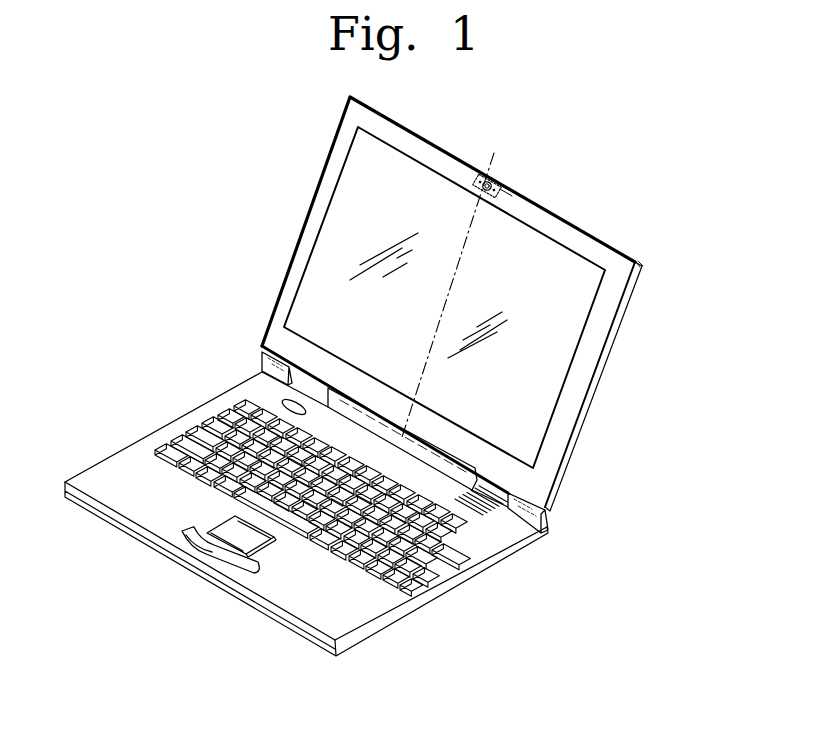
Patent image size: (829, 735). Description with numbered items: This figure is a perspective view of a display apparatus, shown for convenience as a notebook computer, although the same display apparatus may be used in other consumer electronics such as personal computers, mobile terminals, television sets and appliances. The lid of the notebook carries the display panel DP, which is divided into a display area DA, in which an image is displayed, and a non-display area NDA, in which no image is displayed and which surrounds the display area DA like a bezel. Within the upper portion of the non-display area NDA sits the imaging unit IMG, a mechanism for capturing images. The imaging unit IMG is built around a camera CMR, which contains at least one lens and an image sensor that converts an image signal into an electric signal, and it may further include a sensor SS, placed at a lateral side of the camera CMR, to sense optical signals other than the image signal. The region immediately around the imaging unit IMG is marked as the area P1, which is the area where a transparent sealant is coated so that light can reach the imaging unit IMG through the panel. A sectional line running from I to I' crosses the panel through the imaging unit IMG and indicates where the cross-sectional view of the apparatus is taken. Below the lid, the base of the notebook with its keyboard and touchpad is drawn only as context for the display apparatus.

The display panel DP is at (472, 304).
The display area DA is at (556, 262).
The non-display area NDA is at (608, 262).
The imaging unit IMG is at (537, 137).
The camera CMR is at (494, 178).
The sensor SS is at (506, 183).
The area P1 is at (510, 191).
The sectional line I is at (415, 299).
The sectional line I' is at (471, 138).